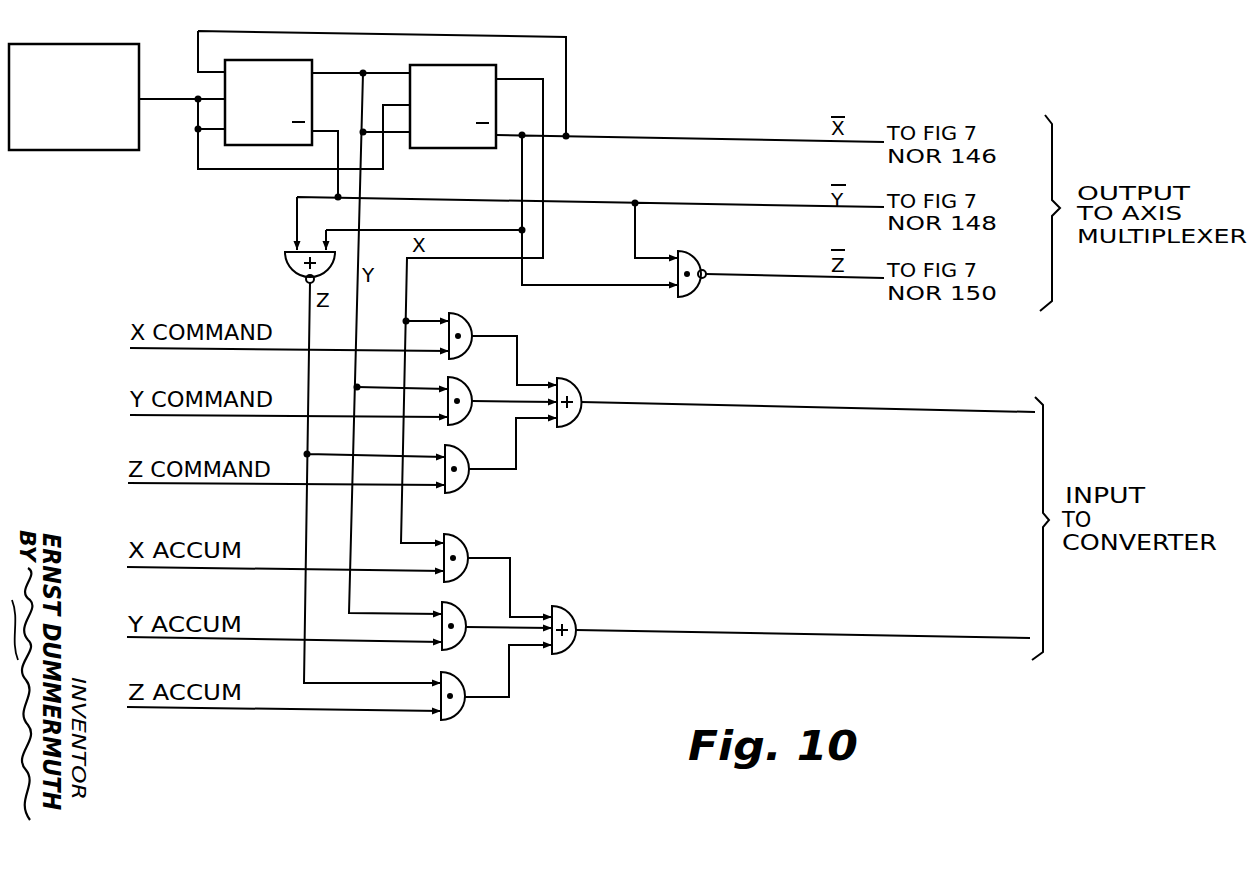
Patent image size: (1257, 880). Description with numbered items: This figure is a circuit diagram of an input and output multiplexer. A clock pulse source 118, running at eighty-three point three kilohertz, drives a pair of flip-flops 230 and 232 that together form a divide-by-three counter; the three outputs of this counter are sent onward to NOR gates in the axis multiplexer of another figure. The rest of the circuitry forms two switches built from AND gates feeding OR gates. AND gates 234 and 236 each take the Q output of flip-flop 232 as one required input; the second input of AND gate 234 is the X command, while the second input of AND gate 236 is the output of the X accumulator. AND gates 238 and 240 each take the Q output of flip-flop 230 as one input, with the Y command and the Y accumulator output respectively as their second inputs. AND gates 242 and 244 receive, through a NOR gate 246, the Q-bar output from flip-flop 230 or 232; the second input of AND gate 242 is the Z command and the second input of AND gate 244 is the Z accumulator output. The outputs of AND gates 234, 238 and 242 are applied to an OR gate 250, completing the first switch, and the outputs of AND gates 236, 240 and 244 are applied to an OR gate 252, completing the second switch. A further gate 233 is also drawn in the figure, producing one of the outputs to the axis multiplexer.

The clock 2 pulse source 118 is at (107, 45).
The flip-flop 230 is at (270, 61).
The flip-flop 232 is at (460, 65).
The NAND gate 233 is at (687, 251).
The AND gate 234 is at (463, 320).
The AND gate 236 is at (456, 537).
The AND gate 238 is at (460, 381).
The AND gate 240 is at (456, 605).
The AND gate 242 is at (456, 449).
The AND gate 244 is at (452, 676).
The NOR gate 246 is at (283, 253).
The OR gate 250 is at (571, 380).
The OR gate 252 is at (568, 608).